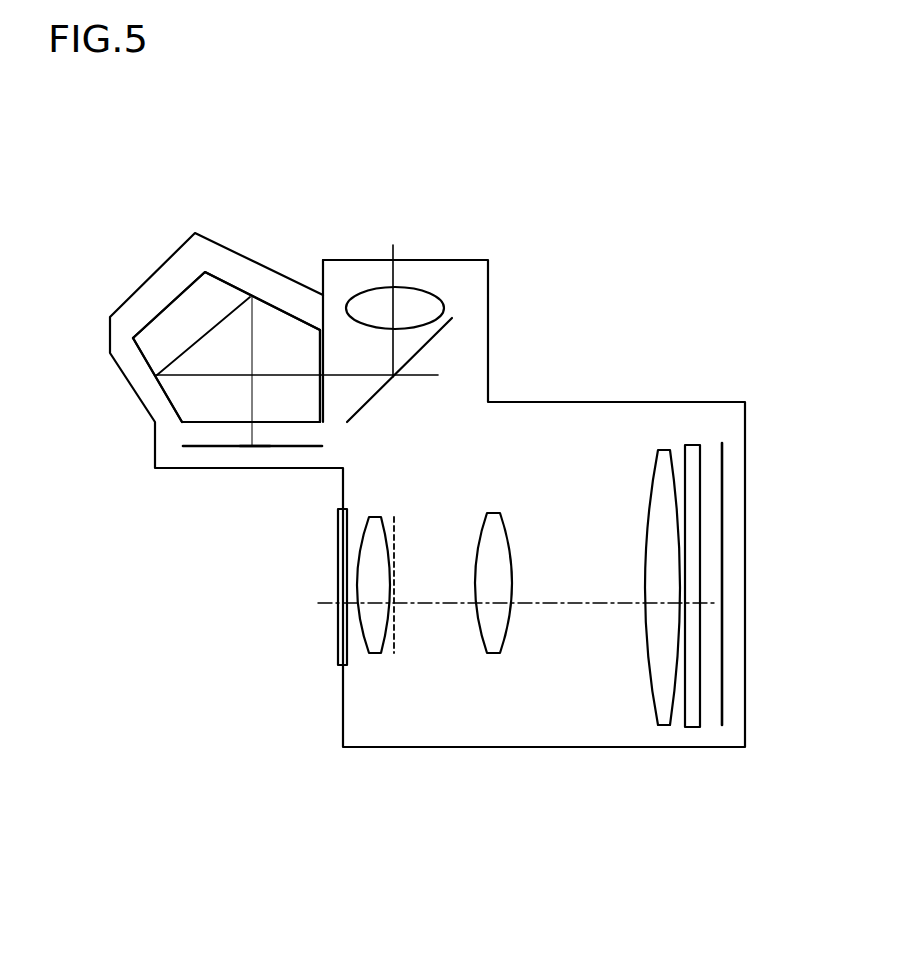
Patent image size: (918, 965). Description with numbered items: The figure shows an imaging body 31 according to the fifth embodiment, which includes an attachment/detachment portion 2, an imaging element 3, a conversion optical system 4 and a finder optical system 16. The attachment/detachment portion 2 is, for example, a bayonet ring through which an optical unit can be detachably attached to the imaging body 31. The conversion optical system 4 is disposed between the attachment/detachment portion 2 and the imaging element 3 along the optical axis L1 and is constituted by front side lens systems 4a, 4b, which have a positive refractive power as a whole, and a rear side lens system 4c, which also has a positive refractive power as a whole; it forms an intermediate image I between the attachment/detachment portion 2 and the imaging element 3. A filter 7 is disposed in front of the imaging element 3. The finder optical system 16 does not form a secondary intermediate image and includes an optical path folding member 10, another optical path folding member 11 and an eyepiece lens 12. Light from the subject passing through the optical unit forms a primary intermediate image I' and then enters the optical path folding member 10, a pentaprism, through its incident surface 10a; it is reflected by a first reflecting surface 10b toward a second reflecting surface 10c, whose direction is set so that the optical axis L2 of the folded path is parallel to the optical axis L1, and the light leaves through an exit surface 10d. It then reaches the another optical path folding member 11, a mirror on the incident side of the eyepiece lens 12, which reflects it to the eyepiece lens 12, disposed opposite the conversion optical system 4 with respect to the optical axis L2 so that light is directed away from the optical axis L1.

The imaging body 31 is at (701, 270).
The finder optical system 16 is at (173, 112).
The optical path folding member 10 is at (170, 304).
The incident surface 10a is at (197, 425).
The first reflecting surface 10b is at (250, 297).
The second reflecting surface 10c is at (142, 363).
The exit surface 10d is at (323, 350).
The eyepiece lens 12 is at (407, 302).
The another optical path folding member 11 is at (452, 320).
The optical axis of the folded optical path L2 is at (314, 378).
The optical axis of the conversion optical system L1 is at (505, 595).
The attachment/detachment portion 2 is at (333, 615).
The conversion optical system 4 is at (683, 880).
The front side lens system 4a is at (370, 637).
The front side lens system 4b is at (488, 630).
The rear side lens system 4c is at (658, 725).
The filter 7 is at (697, 703).
The imaging element 3 is at (725, 530).
The intermediate image I is at (410, 658).
The primary intermediate image I' is at (192, 502).